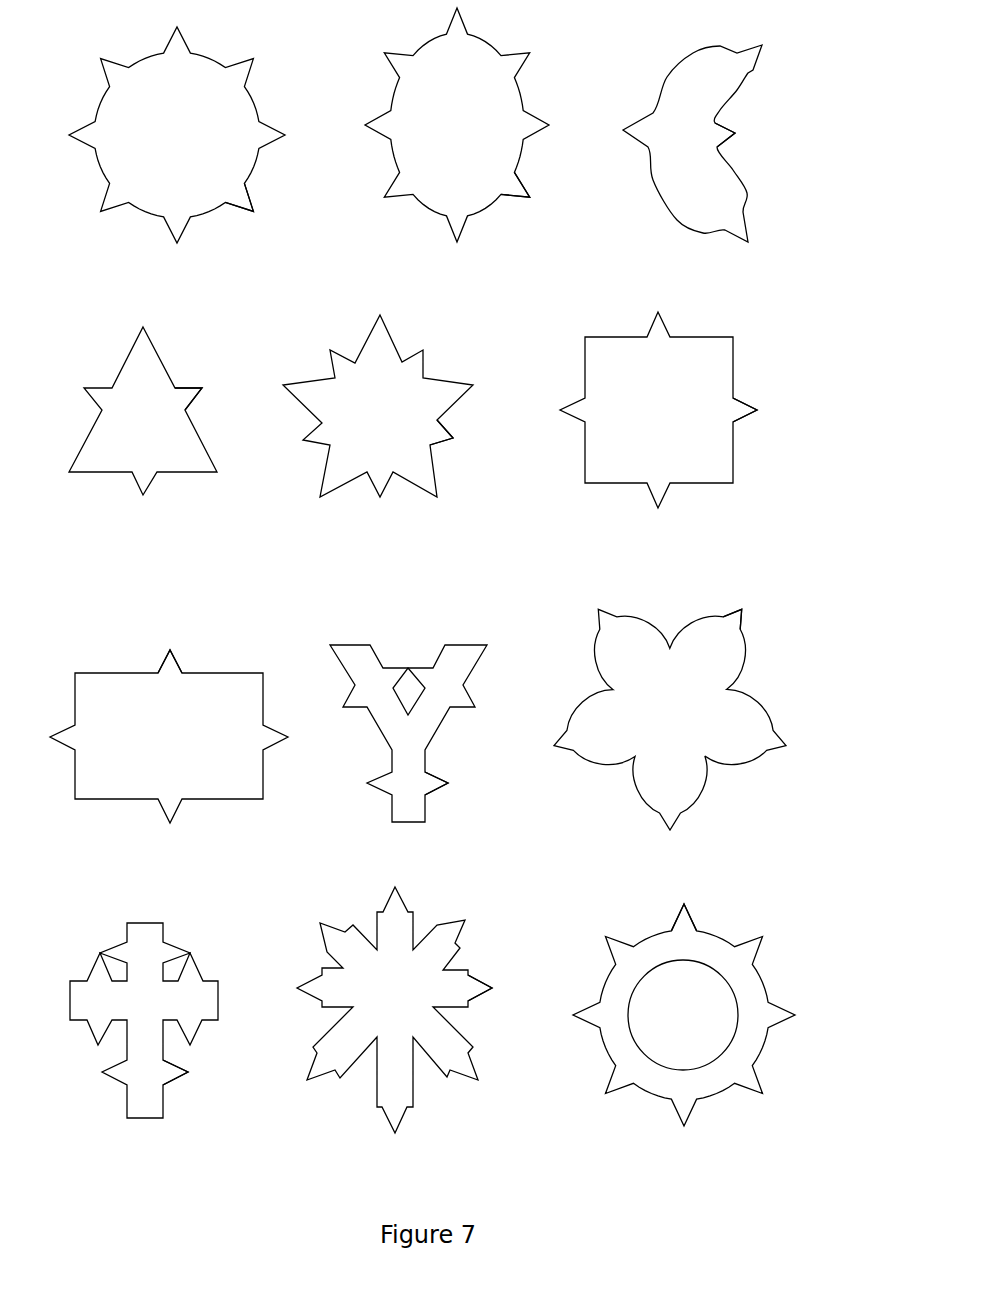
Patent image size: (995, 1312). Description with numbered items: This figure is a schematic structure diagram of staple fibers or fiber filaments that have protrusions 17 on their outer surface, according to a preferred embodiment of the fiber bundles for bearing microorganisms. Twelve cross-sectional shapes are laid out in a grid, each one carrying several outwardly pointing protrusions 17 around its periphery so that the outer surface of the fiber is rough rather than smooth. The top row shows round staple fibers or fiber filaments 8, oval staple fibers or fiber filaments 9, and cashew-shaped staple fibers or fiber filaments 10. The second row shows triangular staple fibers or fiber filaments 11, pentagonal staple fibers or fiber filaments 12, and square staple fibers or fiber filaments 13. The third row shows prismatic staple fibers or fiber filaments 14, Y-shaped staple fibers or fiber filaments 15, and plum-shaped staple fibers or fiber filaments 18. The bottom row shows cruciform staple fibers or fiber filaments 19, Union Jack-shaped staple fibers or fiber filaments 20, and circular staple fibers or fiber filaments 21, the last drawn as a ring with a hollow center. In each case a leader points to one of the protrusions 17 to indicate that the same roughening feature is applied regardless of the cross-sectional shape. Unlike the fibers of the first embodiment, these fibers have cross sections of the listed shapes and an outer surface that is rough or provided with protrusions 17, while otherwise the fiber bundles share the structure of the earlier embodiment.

The round staple fibers or fiber filaments 8 is at (177, 127).
The oval staple fibers or fiber filaments 9 is at (457, 121).
The cashew-shaped staple fibers or fiber filaments 10 is at (719, 138).
The triangular staple fibers or fiber filaments 11 is at (146, 403).
The pentagonal staple fibers or fiber filaments 12 is at (405, 406).
The square staple fibers or fiber filaments 13 is at (678, 406).
The prismatic staple fibers or fiber filaments 14 is at (180, 734).
The Y-shaped staple fibers or fiber filaments 15 is at (430, 711).
The protrusions 17 is at (494, 580).
The plum-shaped staple fibers or fiber filaments 18 is at (670, 702).
The cruciform staple fibers or fiber filaments 19 is at (152, 1002).
The Union Jack-shaped staple fibers or fiber filaments 20 is at (405, 1010).
The circular staple fibers or fiber filaments 21 is at (699, 1015).